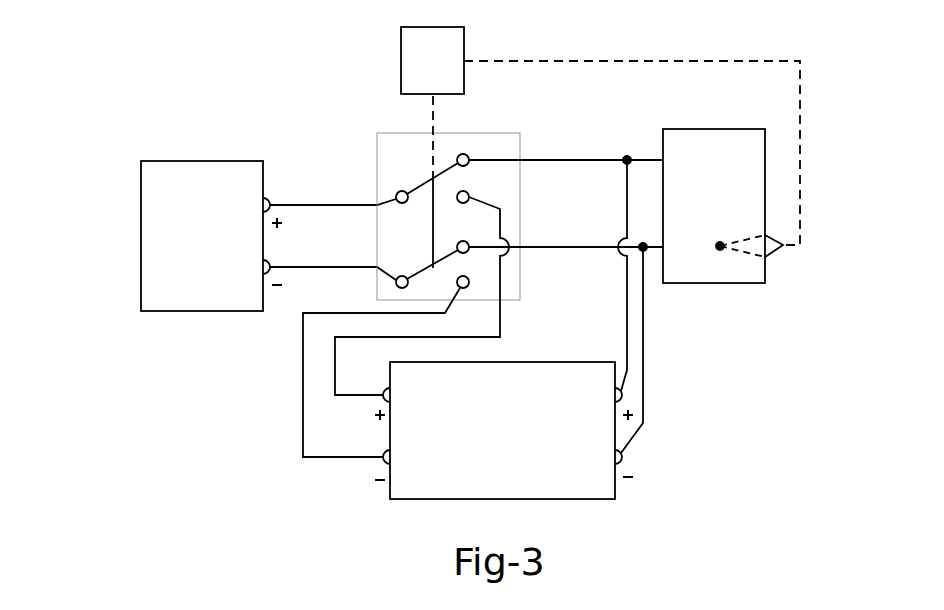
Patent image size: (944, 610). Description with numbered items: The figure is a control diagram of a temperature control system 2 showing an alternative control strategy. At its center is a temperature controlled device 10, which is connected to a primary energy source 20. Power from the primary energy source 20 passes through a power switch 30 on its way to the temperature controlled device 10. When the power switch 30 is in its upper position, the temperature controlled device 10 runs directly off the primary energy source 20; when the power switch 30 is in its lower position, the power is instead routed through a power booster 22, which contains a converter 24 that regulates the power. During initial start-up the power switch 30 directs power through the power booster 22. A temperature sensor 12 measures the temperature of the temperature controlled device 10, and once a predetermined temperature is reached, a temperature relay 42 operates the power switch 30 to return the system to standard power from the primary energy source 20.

The temperature control system 2 is at (268, 90).
The temperature controlled device 10 is at (765, 207).
The temperature sensor 12 is at (712, 253).
The primary energy source 20 is at (141, 237).
The power booster 22 is at (350, 479).
The converter 24 is at (654, 479).
The power switch 30 is at (356, 184).
The temperature relay 42 is at (401, 60).